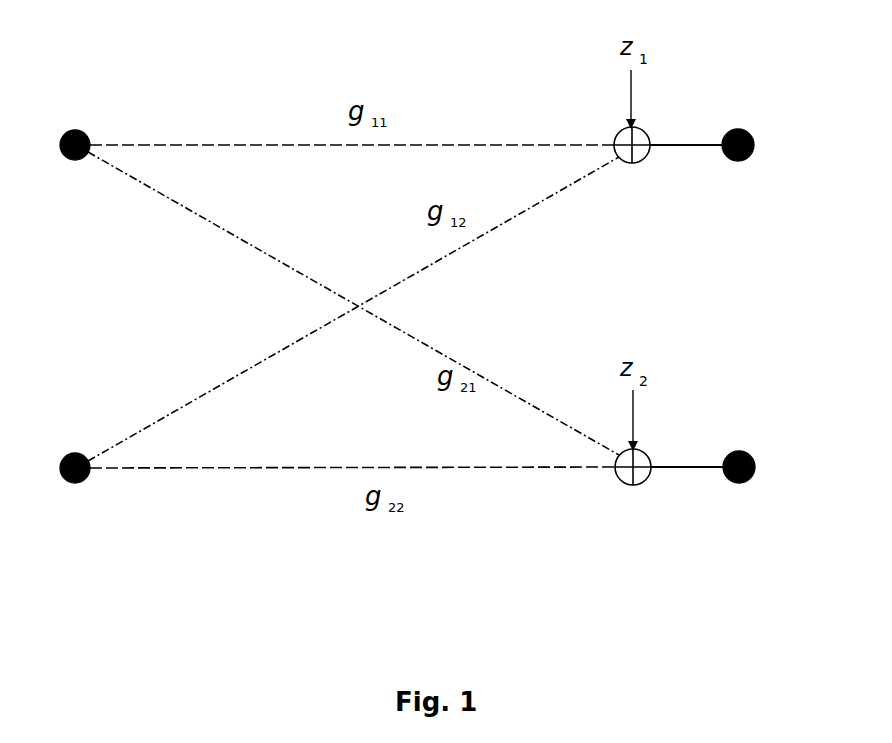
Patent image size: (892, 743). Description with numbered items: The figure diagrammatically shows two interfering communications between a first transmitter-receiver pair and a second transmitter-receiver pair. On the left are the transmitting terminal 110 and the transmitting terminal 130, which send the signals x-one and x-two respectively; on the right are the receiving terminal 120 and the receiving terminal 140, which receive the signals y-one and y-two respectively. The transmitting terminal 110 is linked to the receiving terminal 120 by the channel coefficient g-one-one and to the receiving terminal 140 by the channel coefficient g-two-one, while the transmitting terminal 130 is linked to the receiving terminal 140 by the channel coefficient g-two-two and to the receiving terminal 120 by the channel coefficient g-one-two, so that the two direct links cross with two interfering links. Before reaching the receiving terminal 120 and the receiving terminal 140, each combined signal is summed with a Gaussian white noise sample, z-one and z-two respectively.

The transmitting terminal 110 is at (79, 130).
The receiving terminal 120 is at (738, 128).
The transmitting terminal 130 is at (77, 484).
The receiving terminal 140 is at (737, 492).